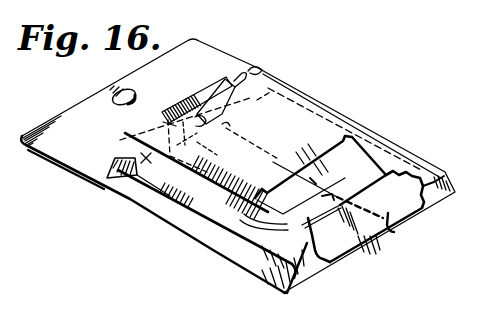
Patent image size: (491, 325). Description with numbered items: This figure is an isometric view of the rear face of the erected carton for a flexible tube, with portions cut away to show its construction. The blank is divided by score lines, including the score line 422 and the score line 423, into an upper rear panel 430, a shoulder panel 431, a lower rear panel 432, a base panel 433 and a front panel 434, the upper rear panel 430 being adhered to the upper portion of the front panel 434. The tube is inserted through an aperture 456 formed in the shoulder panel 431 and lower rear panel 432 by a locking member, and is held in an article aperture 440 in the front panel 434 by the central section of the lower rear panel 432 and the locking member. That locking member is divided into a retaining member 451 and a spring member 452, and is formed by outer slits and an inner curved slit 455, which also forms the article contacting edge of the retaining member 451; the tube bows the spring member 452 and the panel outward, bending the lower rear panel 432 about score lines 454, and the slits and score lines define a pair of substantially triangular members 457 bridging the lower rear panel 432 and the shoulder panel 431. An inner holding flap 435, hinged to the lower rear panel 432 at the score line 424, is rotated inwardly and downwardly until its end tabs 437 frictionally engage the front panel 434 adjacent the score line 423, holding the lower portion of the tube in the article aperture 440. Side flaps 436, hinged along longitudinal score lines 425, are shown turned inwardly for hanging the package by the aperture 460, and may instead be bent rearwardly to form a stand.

The score line 422 is at (427, 164).
The score line 423 is at (358, 258).
The score line 424 is at (323, 198).
The longitudinal score lines 425 is at (402, 148).
The upper rear panel 430 is at (178, 87).
The shoulder panel 431 is at (110, 172).
The lower rear panel 432 is at (318, 150).
The base panel 433 is at (308, 272).
The front panel 434 is at (135, 203).
The inner holding flap 435 is at (388, 196).
The side flaps 436 is at (360, 126).
The end tabs 437 is at (421, 214).
The article aperture 440 is at (313, 180).
The retaining member 451 is at (163, 122).
The spring member 452 is at (223, 106).
The score lines 454 is at (263, 67).
The inner curved slit 455 is at (224, 127).
The aperture 456 is at (163, 120).
The triangular members 457 is at (236, 78).
The aperture 460 is at (113, 91).